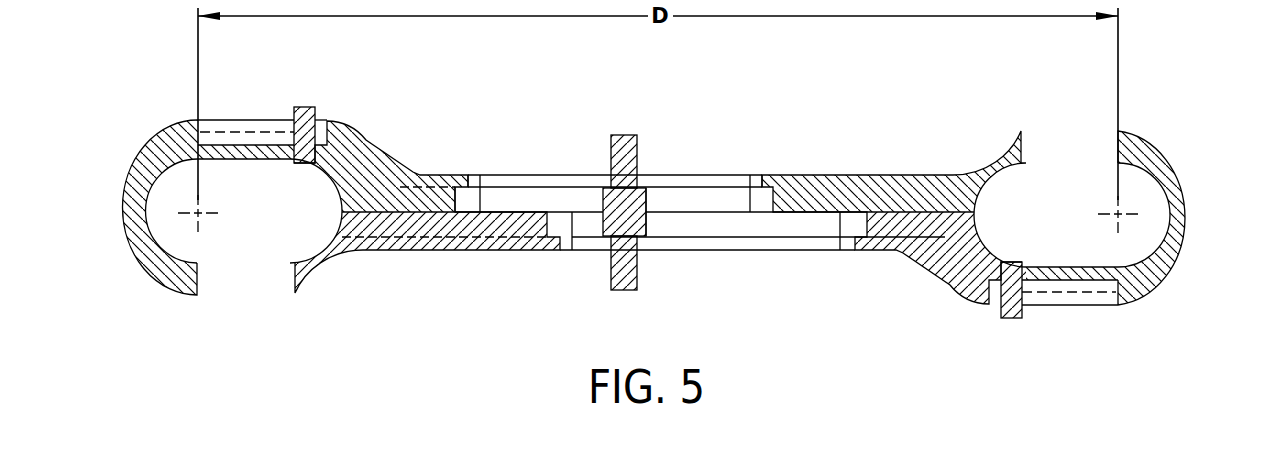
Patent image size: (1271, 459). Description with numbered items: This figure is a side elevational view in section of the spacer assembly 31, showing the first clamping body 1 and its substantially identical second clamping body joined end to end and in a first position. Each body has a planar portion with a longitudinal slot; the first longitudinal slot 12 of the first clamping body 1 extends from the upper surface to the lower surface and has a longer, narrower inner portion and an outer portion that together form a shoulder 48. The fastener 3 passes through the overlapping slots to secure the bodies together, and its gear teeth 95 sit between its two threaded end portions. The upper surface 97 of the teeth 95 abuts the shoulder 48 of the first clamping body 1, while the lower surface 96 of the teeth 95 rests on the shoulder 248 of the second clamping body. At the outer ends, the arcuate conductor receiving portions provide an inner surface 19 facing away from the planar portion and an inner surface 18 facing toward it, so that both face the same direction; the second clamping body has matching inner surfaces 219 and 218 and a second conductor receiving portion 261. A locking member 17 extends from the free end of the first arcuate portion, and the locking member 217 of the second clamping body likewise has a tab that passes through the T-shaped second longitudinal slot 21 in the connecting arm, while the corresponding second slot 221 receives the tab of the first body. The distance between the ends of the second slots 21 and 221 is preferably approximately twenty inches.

The first clamping body 1 is at (812, 158).
The fastener 3 is at (628, 118).
The first longitudinal slot 12 is at (497, 187).
The locking member 17 is at (1015, 329).
The inner surface of the second arcuate portion 18 is at (167, 250).
The inner surface of the first arcuate portion 19 is at (984, 226).
The second longitudinal slot 21 is at (245, 120).
The spacer assembly 31 is at (752, 120).
The shoulder 48 is at (575, 188).
The gear teeth 95 is at (647, 220).
The lower surface of the teeth 96 is at (639, 238).
The upper surface of the teeth 97 is at (651, 188).
The locking member of the second clamping body 217 is at (305, 98).
The inner surface of the second arcuate portion of the second clamping body 218 is at (1145, 255).
The inner surface of the first arcuate portion of the second clamping body 219 is at (341, 213).
The second longitudinal slot of the second clamping body 221 is at (1095, 305).
The shoulder of the second clamping body 248 is at (800, 226).
The second conductor receiving portion of the second clamping body 261 is at (1196, 175).